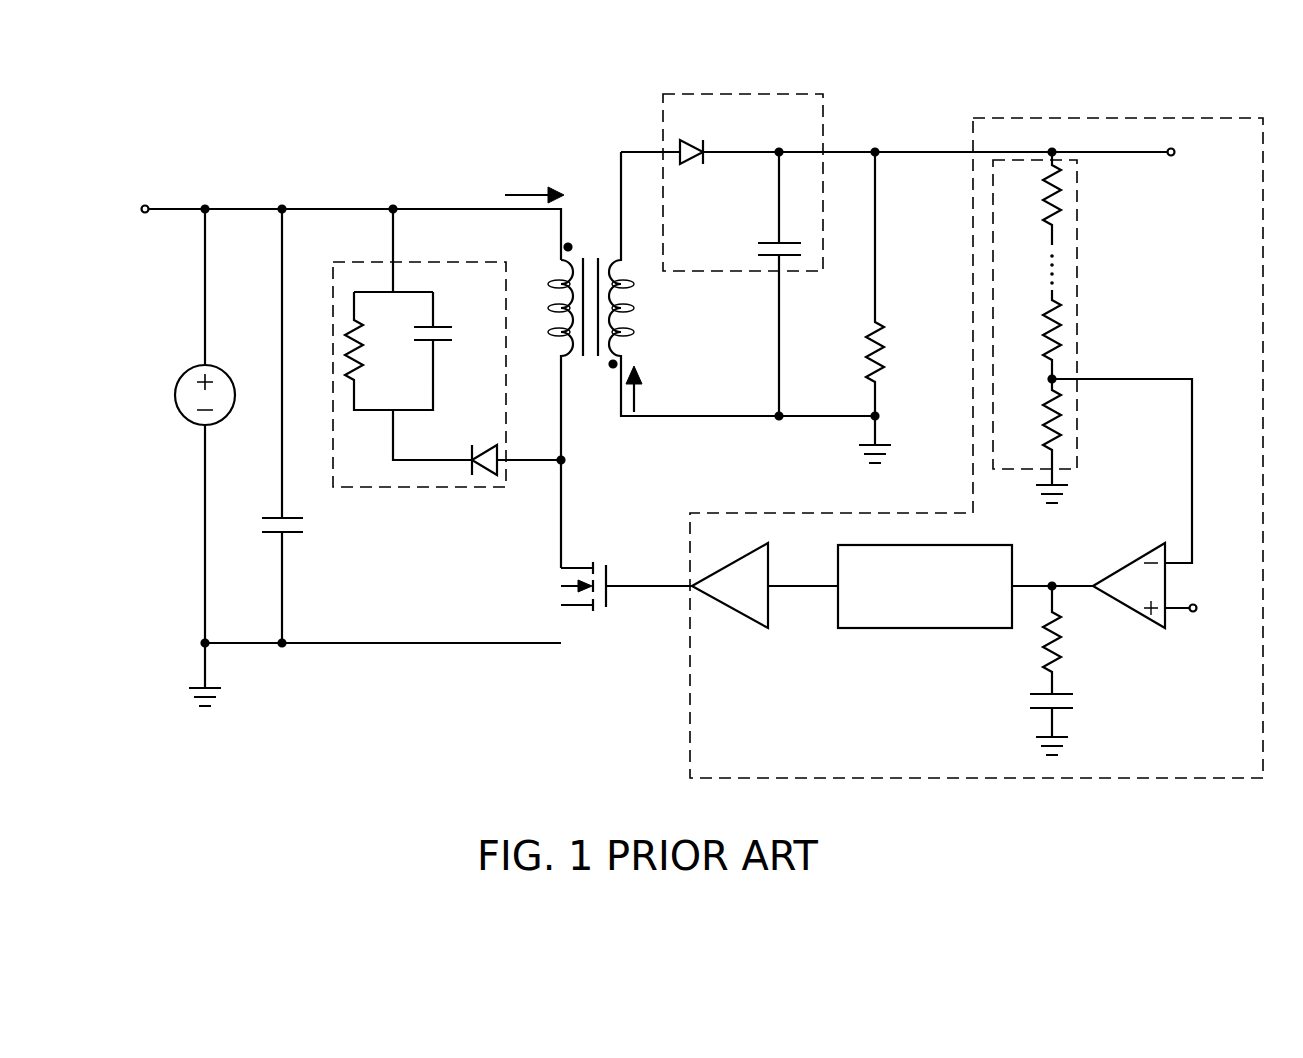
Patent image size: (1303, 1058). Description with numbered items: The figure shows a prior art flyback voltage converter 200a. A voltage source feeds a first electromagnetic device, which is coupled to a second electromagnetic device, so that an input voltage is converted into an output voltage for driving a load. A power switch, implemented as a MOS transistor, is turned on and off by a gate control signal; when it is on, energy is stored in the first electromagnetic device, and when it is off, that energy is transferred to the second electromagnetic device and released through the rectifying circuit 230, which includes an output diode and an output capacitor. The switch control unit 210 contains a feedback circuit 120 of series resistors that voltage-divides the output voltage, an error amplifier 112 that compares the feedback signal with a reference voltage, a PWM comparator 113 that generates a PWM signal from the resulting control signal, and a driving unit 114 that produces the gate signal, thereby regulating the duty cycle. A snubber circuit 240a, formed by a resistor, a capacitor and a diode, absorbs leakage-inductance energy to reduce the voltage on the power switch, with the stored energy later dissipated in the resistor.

The flyback voltage converter 200a is at (278, 130).
The snubber circuit 240a is at (453, 487).
The rectifying circuit 230 is at (731, 271).
The feedback circuit 120 is at (1077, 303).
The switch control unit 210 is at (688, 727).
The driving unit 114 is at (731, 610).
The pulse width modulation comparator 113 is at (925, 628).
The error amplifier 112 is at (1127, 608).